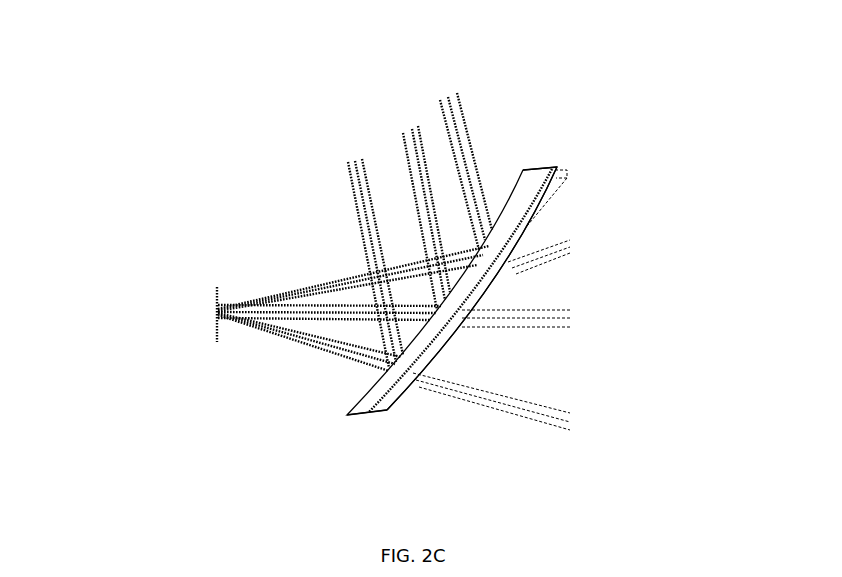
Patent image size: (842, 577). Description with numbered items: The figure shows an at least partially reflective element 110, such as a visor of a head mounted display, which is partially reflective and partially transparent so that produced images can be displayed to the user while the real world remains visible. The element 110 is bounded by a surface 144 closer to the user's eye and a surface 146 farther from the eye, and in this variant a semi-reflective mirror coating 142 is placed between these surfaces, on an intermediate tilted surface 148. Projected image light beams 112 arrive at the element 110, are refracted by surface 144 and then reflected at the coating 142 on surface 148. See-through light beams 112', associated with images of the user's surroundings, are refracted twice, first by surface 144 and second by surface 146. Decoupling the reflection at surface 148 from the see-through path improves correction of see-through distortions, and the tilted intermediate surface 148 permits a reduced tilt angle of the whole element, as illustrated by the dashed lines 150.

The at least partially reflective element 110 is at (360, 387).
The light beams 112 is at (420, 198).
The see-through light beams 112' is at (545, 335).
The semi-reflective mirror coating 142 is at (410, 382).
The surface 144 is at (522, 168).
The surface 146 is at (550, 185).
The surface 148 is at (551, 167).
The dashed lines 150 is at (567, 174).